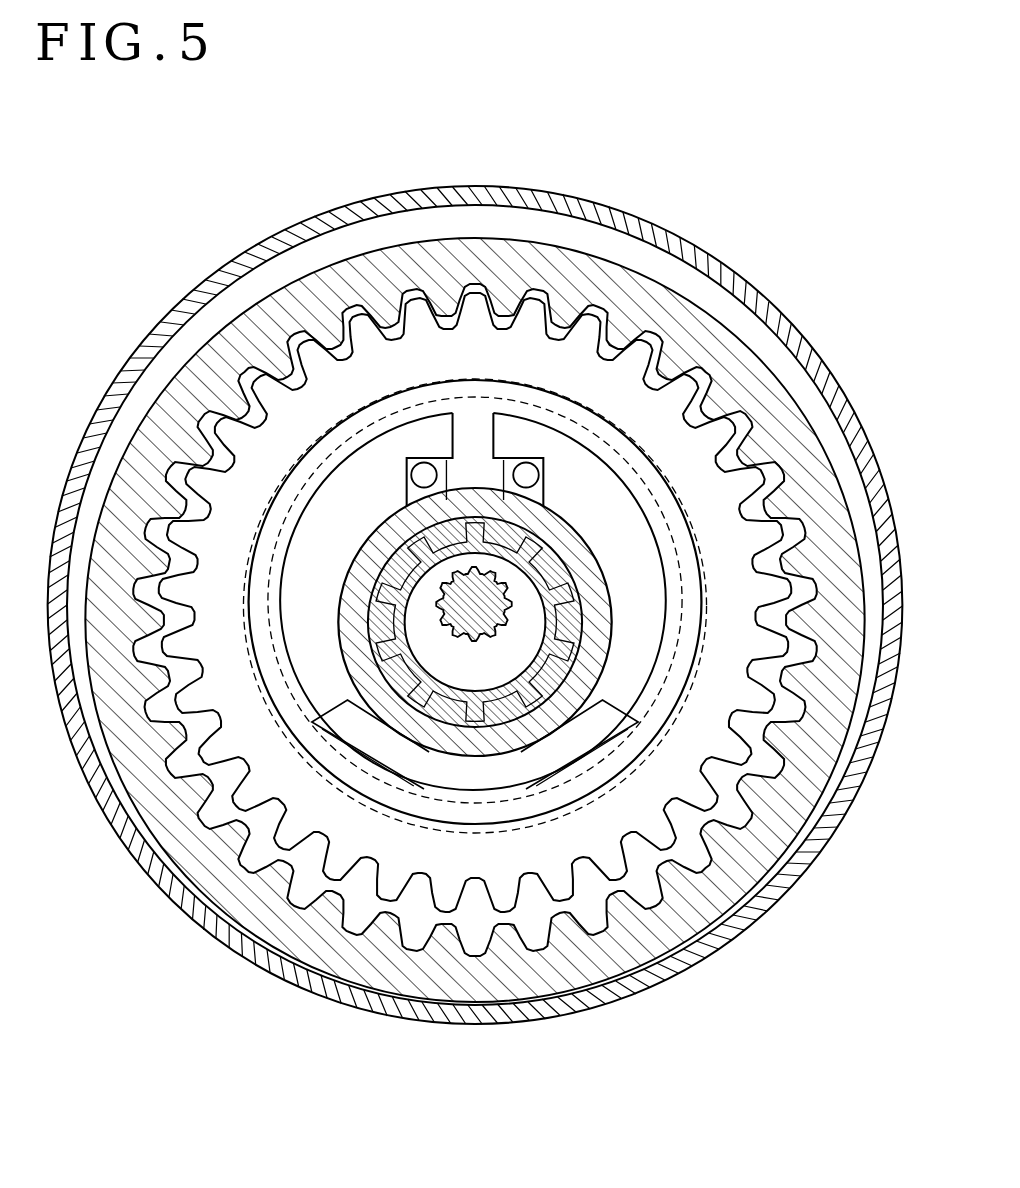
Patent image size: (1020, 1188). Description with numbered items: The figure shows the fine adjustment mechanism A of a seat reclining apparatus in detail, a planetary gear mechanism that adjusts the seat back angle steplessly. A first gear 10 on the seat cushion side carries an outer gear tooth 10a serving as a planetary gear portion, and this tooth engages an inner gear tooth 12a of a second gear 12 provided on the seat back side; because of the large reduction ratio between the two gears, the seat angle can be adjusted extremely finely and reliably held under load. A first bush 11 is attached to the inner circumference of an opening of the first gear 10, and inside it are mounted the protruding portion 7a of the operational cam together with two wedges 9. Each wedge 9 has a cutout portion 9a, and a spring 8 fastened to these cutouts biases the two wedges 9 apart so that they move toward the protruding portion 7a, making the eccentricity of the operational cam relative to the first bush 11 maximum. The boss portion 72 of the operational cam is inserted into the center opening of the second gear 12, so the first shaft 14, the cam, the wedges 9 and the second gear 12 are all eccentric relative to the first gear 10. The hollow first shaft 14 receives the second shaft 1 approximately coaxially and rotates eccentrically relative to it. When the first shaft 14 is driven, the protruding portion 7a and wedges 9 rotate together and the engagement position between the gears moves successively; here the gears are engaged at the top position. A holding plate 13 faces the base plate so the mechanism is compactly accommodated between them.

The second shaft 1 is at (462, 630).
The boss portion 72 is at (560, 580).
The protruding portion 7a is at (403, 757).
The spring 8 is at (696, 518).
The wedges 9 is at (300, 606).
The cutout portion 9a is at (405, 507).
The first gear 10 is at (370, 482).
The outer gear tooth 10a is at (347, 298).
The first bush 11 is at (462, 398).
The second gear 12 is at (763, 377).
The inner gear tooth 12a is at (502, 313).
The holding plate 13 is at (683, 238).
The first shaft 14 is at (557, 628).
The fine adjustment mechanism A is at (192, 346).